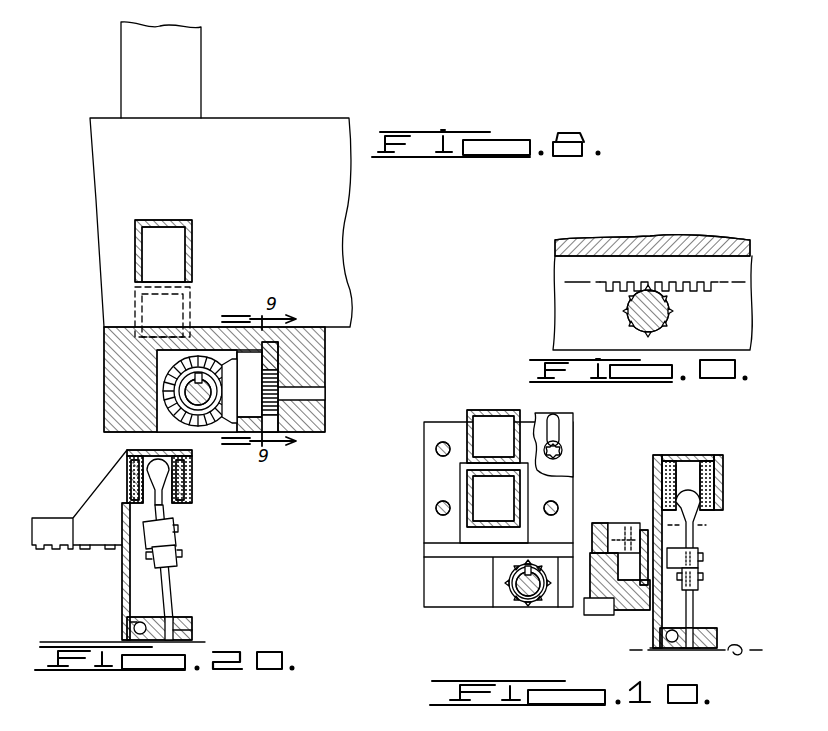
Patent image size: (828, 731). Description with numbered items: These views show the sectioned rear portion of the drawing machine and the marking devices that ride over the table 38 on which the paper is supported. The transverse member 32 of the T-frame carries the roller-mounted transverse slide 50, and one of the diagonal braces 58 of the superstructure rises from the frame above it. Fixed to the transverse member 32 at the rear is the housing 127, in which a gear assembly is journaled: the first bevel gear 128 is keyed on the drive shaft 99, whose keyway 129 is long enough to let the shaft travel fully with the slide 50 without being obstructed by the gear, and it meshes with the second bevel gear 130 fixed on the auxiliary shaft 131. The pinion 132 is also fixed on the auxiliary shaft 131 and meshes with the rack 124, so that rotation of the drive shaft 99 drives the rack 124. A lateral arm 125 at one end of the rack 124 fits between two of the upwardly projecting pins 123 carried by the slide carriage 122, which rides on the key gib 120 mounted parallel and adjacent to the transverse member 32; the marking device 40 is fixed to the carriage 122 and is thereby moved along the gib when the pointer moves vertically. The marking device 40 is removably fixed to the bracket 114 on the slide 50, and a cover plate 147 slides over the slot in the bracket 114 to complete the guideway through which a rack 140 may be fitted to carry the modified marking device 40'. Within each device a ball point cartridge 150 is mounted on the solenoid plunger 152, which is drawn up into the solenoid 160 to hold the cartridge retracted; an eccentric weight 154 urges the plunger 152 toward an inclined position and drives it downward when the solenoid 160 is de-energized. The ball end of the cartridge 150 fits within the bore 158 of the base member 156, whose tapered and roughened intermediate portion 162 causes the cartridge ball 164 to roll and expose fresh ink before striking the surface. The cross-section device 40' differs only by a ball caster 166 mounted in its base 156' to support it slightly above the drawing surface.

In FIG. 8, the diagonal brace 58 is at (185, 84).
In FIG. 8, the transverse slide 50 is at (172, 222).
In FIG. 10, the transverse slide 50 is at (483, 410).
In FIG. 8, the transverse member 32 is at (135, 294).
In FIG. 10, the transverse member 32 is at (467, 483).
In FIG. 8, the housing 127 is at (112, 332).
In FIG. 8, the keyway 129 is at (180, 380).
In FIG. 10, the keyway 129 is at (520, 580).
In FIG. 8, the drive shaft 99 is at (190, 386).
In FIG. 10, the drive shaft 99 is at (530, 600).
In FIG. 8, the first bevel gear 128 is at (196, 358).
In FIG. 8, the second bevel gear 130 is at (240, 356).
In FIG. 8, the rack 124 is at (280, 362).
In FIG. 9, the rack 124 is at (650, 282).
In FIG. 10, the rack 124 is at (593, 523).
In FIG. 8, the pinion 132 is at (278, 375).
In FIG. 9, the pinion 132 is at (628, 311).
In FIG. 8, the auxiliary shaft 131 is at (312, 393).
In FIG. 10, the bracket 114 is at (432, 430).
In FIG. 10, the cover plate 147 is at (573, 413).
In FIG. 10, the lateral arm 125 is at (610, 528).
In FIG. 10, the pin 123 is at (650, 545).
In FIG. 10, the key gib 120 is at (640, 606).
In FIG. 10, the slide carriage 122 is at (604, 588).
In FIG. 10, the marking device 40 is at (717, 551).
In FIG. 20, the modified marking device 40' is at (111, 545).
In FIG. 10, the solenoid 160 is at (676, 456).
In FIG. 20, the solenoid 160 is at (192, 468).
In FIG. 10, the solenoid plunger 152 is at (690, 500).
In FIG. 20, the solenoid plunger 152 is at (172, 490).
In FIG. 10, the weight 154 is at (700, 556).
In FIG. 20, the weight 154 is at (165, 530).
In FIG. 20, the ball point cartridge 150 is at (182, 588).
In FIG. 10, the base member 156 is at (721, 632).
In FIG. 20, the base 156' is at (188, 613).
In FIG. 10, the bore 158 is at (698, 630).
In FIG. 20, the bore 158 is at (126, 620).
In FIG. 10, the intermediate portion of the bore 162 is at (658, 648).
In FIG. 20, the intermediate portion of the bore 162 is at (146, 626).
In FIG. 10, the cartridge ball 164 is at (690, 648).
In FIG. 20, the cartridge ball 164 is at (193, 632).
In FIG. 20, the ball caster 166 is at (125, 640).
In FIG. 10, the table 38 is at (742, 654).
In FIG. 20, the rack 140 is at (56, 547).